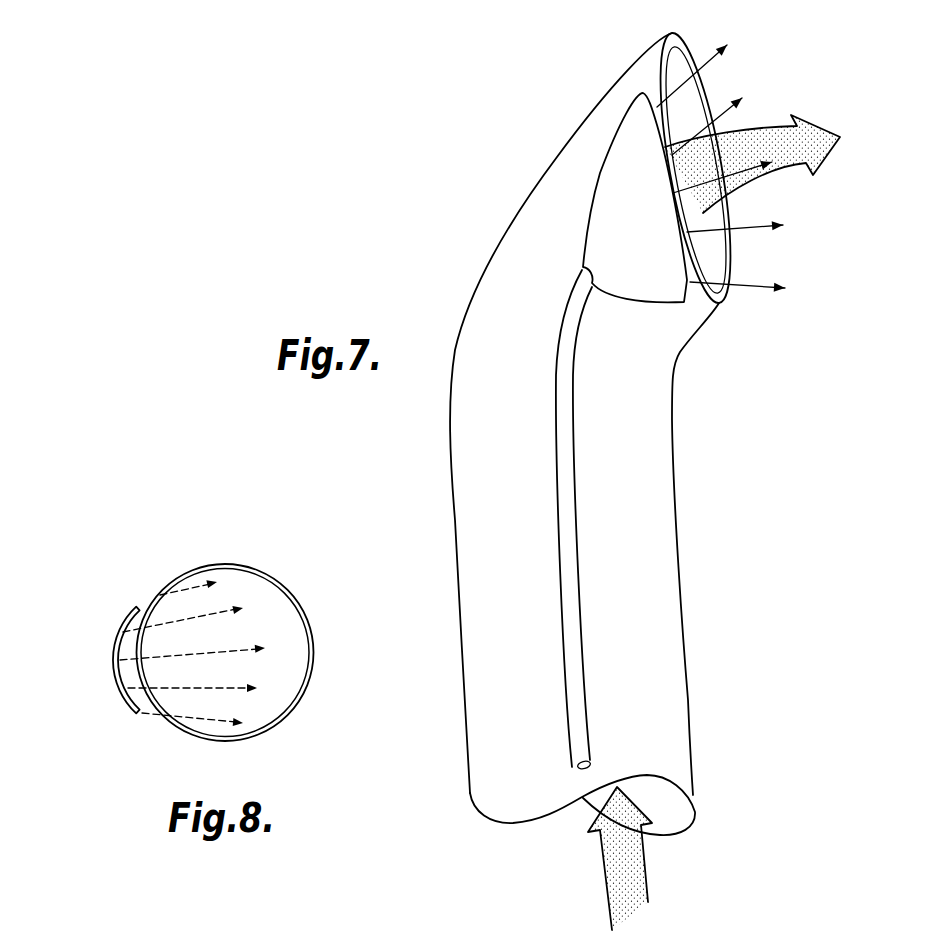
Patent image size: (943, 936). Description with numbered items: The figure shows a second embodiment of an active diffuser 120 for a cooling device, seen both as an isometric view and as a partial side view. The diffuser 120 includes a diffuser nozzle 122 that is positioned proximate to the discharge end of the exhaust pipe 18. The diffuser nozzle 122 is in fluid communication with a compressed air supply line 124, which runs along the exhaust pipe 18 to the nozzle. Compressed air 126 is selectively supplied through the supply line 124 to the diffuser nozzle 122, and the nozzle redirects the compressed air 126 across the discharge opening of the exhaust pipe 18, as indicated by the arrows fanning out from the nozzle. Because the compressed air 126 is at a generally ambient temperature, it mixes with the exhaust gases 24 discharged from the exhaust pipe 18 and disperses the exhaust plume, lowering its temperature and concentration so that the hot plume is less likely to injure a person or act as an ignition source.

In FIG. 7, the exhaust pipe 18 is at (675, 420).
In FIG. 8, the exhaust pipe 18 is at (303, 609).
In FIG. 7, the exhaust gases 24 is at (767, 127).
In FIG. 7, the diffuser 120 is at (548, 270).
In FIG. 8, the diffuser 120 is at (106, 687).
In FIG. 7, the diffuser nozzle 122 is at (600, 177).
In FIG. 8, the diffuser nozzle 122 is at (119, 634).
In FIG. 7, the compressed air supply line 124 is at (558, 530).
In FIG. 7, the compressed air 126 is at (685, 75).
In FIG. 8, the compressed air 126 is at (178, 593).